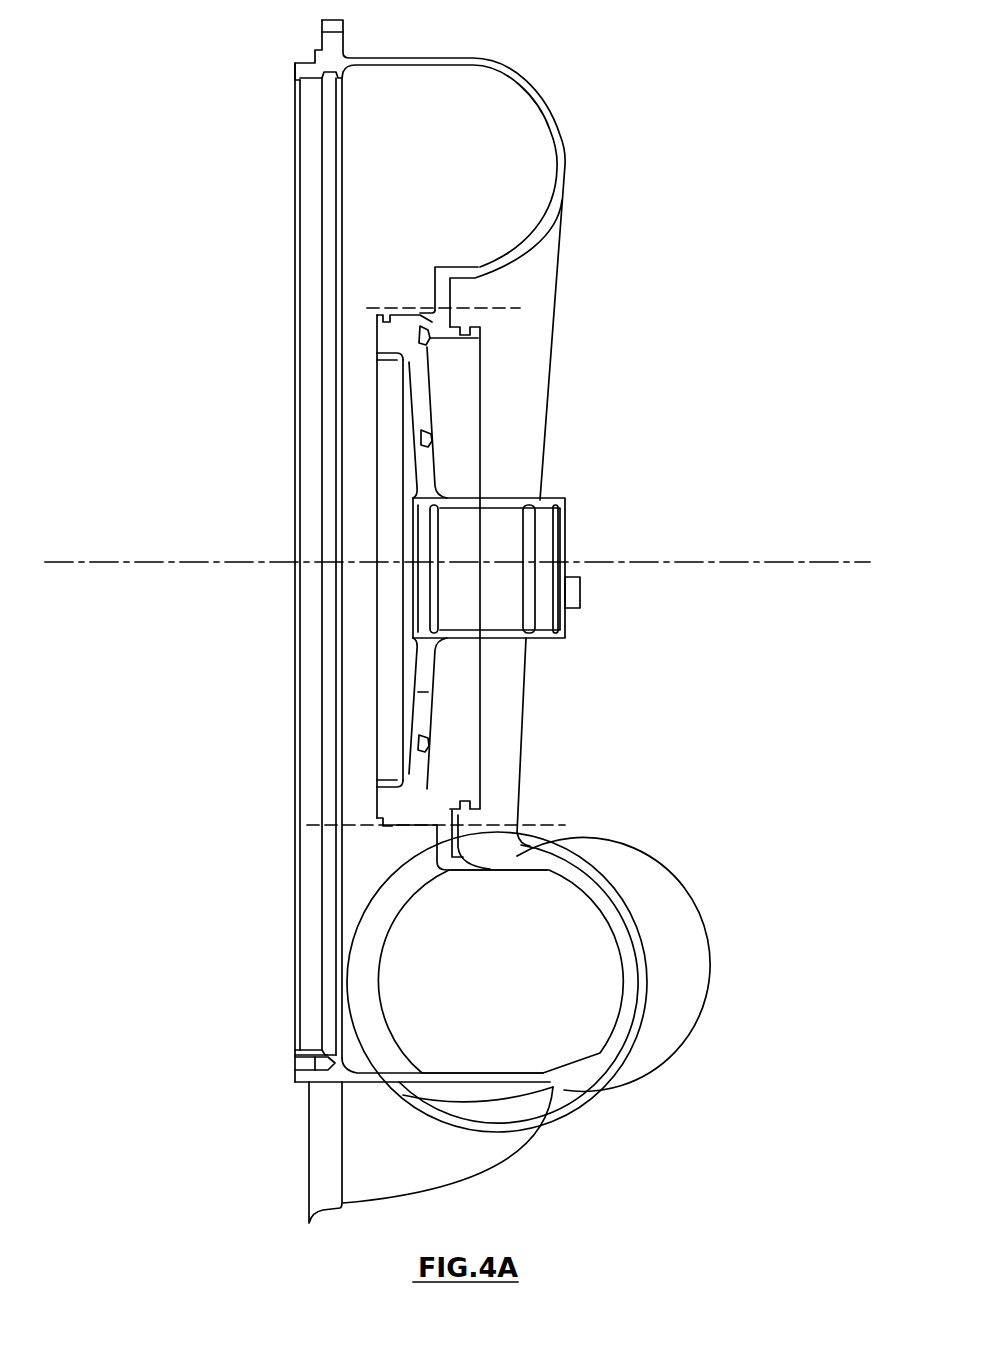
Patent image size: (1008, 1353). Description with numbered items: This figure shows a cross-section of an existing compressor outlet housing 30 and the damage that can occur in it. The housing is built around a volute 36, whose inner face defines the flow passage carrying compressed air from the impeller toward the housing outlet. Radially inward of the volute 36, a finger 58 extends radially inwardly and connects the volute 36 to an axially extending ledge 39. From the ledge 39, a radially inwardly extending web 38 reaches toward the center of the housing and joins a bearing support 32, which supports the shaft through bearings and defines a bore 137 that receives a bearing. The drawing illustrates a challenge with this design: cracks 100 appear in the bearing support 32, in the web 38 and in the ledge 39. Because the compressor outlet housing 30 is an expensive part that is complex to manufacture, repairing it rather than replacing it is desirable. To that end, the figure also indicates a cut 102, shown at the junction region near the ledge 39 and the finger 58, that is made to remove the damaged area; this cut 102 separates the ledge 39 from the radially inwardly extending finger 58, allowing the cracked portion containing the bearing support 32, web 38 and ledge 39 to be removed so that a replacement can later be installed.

The outlet housing 30 is at (720, 344).
The bearing support 32 is at (500, 503).
The volute 36 is at (545, 112).
The web 38 is at (428, 412).
The ledge 39 is at (393, 340).
The finger 58 is at (443, 292).
The cracks 100 is at (432, 337).
The cut 102 is at (421, 308).
The bore 137 is at (548, 624).